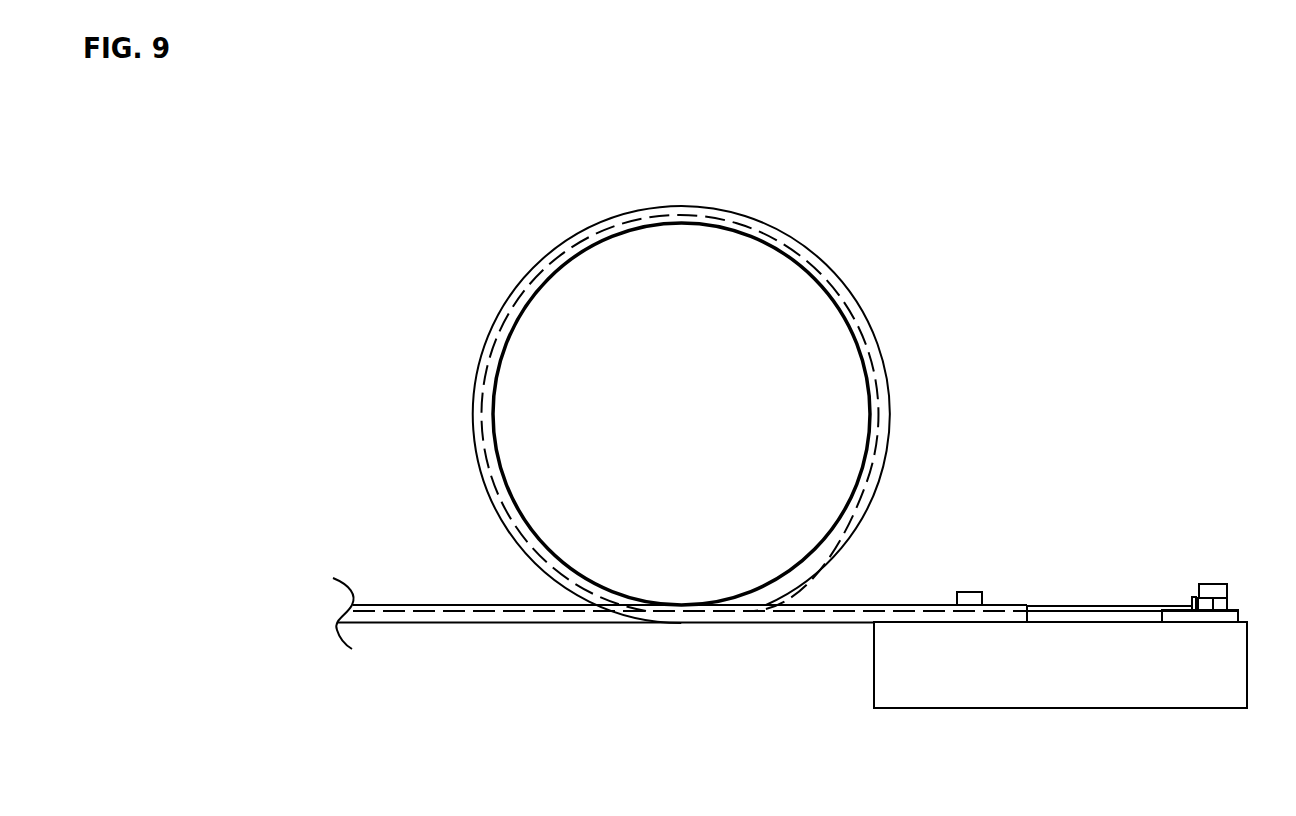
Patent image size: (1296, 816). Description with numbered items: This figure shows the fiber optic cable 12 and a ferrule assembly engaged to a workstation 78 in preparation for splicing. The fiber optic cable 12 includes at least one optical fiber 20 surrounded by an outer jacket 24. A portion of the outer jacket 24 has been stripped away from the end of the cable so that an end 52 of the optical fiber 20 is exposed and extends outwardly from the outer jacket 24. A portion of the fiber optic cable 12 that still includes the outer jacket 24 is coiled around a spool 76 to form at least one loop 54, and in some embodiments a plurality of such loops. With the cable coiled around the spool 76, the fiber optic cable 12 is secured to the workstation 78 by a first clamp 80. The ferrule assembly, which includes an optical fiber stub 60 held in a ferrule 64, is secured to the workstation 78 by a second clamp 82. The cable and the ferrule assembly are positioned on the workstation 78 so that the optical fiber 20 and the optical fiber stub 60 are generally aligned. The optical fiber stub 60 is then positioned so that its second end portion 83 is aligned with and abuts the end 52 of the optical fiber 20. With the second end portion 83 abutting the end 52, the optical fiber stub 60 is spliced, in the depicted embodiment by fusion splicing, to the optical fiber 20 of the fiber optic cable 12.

The fiber optic cable 12 is at (610, 387).
The loop 54 is at (780, 228).
The spool 76 is at (815, 330).
The outer jacket 24 is at (758, 623).
The workstation 78 is at (867, 682).
The optical fiber 20 is at (1086, 606).
The first clamp 80 is at (968, 592).
The ferrule 64 is at (1201, 622).
The optical fiber stub 60 is at (1186, 606).
The second clamp 82 is at (1220, 584).
The second end portion 83 is at (1183, 606).
The end 52 is at (1165, 607).